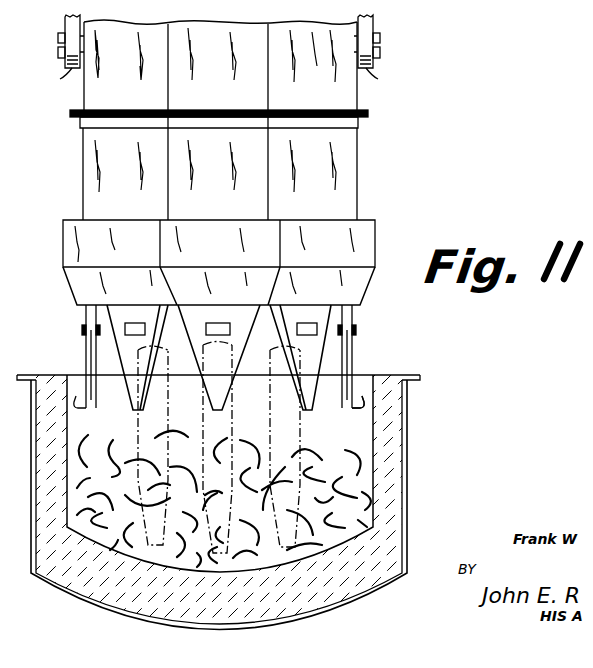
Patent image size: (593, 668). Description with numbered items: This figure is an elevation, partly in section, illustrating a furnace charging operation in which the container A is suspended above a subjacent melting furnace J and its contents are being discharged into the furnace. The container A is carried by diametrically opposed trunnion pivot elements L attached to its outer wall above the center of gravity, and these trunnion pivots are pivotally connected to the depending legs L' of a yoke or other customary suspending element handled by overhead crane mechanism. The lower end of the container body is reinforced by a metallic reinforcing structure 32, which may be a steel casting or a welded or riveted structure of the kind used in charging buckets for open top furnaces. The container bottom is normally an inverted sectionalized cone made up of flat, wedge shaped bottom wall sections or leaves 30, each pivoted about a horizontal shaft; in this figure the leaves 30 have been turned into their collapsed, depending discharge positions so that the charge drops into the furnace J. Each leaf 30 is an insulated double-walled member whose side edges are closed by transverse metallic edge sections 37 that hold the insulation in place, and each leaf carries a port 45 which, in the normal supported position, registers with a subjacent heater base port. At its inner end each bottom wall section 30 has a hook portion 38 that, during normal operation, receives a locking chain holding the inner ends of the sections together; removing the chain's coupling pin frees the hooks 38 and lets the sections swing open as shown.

The trunnion pivot element L is at (217, 41).
The depending leg of yoke L' is at (218, 76).
The container A is at (359, 173).
The reinforcing structure 32 is at (376, 228).
The port 45 is at (310, 322).
The edge section 37 is at (356, 343).
The bottom wall section 30 is at (355, 355).
The hook portion 38 is at (359, 410).
The melting furnace J is at (405, 463).